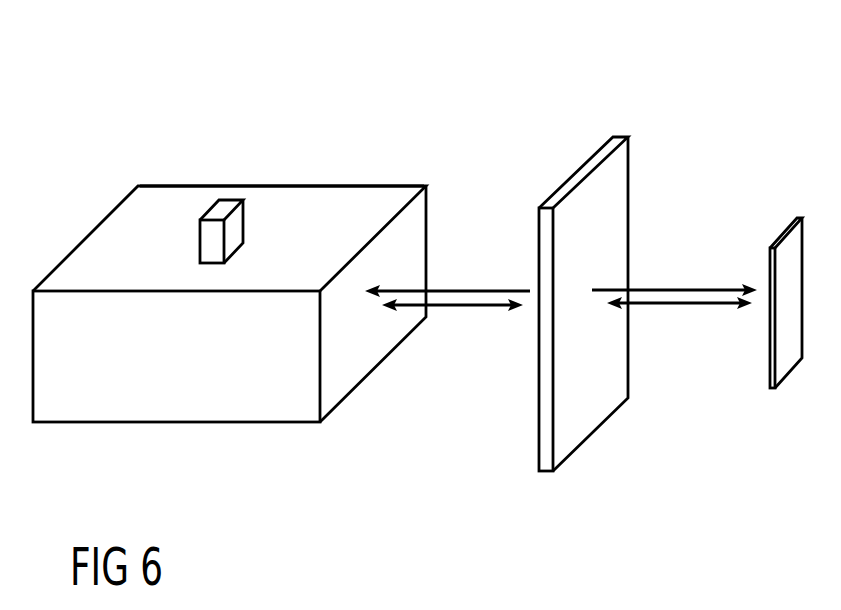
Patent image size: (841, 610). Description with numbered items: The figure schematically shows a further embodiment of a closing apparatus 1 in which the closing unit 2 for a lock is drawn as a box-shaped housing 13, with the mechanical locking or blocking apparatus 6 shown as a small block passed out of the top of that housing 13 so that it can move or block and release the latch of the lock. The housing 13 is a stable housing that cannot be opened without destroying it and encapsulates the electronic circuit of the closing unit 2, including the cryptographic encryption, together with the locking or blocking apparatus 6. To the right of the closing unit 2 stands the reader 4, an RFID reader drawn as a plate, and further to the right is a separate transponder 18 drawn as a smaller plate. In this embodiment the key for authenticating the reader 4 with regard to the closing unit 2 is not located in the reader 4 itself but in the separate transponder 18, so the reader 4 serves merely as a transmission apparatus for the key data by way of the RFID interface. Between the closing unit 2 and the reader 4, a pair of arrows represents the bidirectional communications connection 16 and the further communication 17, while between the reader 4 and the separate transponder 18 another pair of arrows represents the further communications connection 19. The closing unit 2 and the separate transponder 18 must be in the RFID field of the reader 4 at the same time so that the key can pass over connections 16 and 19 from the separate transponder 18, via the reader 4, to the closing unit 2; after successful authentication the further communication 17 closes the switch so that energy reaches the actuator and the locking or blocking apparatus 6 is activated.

The closing apparatus 1 is at (505, 126).
The closing unit 2 is at (145, 213).
The reader 4 is at (608, 185).
The locking or blocking apparatus 6 is at (220, 210).
The housing 13 is at (345, 185).
The bidirectional communications connection 16 is at (443, 307).
The further communication 17 is at (445, 289).
The separate transponder 18 is at (790, 250).
The further communications connection 19 is at (678, 322).